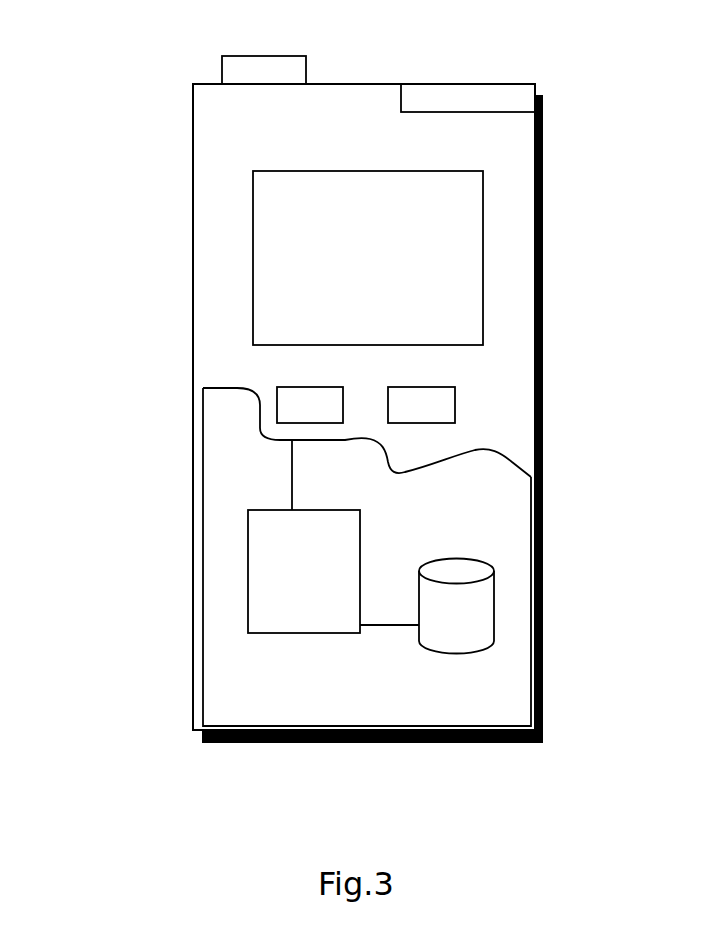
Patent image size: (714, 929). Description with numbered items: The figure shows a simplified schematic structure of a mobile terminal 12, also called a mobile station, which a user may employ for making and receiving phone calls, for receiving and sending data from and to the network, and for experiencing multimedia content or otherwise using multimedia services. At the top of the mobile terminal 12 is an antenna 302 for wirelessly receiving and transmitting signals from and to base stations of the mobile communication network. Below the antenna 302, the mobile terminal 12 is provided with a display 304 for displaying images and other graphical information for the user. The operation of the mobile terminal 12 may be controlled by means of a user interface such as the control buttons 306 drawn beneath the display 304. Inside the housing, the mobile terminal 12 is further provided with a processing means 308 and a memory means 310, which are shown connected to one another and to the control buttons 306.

The handheld device 12 is at (217, 176).
The antenna / top module 302 is at (253, 65).
The display 304 is at (298, 262).
The input buttons 306 is at (292, 407).
The processor 308 is at (293, 568).
The memory / storage 310 is at (442, 638).